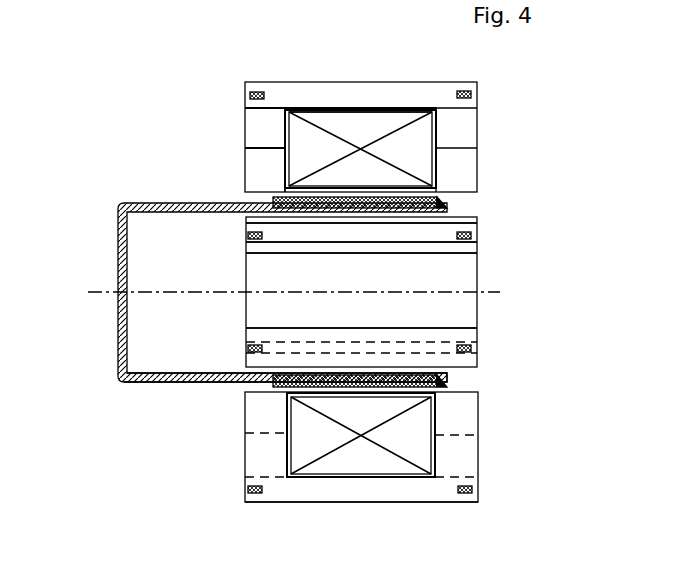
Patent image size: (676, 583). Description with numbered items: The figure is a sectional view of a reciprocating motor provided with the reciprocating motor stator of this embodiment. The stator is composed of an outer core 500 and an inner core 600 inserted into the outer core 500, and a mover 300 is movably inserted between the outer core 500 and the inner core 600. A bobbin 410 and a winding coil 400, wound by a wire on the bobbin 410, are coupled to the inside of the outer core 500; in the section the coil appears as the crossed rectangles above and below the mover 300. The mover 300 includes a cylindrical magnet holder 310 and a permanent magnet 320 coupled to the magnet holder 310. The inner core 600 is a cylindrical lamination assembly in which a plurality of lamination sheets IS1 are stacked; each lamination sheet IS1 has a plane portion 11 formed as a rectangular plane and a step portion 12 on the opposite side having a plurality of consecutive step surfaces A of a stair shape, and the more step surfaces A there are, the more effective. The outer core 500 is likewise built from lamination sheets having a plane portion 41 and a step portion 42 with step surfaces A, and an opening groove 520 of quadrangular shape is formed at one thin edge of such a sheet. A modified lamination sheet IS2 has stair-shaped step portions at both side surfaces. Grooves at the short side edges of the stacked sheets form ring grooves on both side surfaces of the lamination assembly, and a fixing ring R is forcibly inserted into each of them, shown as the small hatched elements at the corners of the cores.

The outer core 500 is at (492, 128).
The step portion 42 is at (196, 93).
The winding coil 400 is at (354, 115).
The opening groove 520 is at (300, 112).
The bobbin 410 is at (405, 110).
The mover 300 is at (462, 205).
The magnet holder 310 is at (442, 377).
The step portion 12 is at (72, 195).
The step surfaces A is at (245, 170).
The inner core 600 is at (492, 232).
The lamination sheet IS1 is at (433, 328).
The plane portion 41 is at (250, 461).
The permanent magnet 320 is at (436, 408).
The lamination sheet IS2 is at (361, 503).
The plane portion 11 is at (262, 378).
The fixing ring R is at (251, 95).